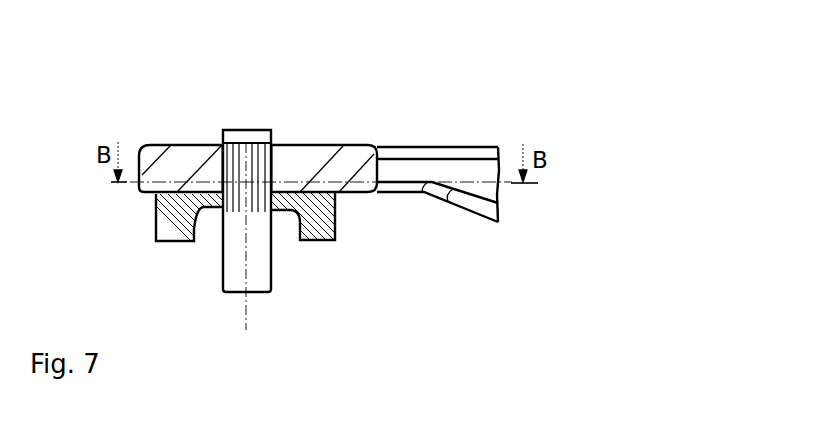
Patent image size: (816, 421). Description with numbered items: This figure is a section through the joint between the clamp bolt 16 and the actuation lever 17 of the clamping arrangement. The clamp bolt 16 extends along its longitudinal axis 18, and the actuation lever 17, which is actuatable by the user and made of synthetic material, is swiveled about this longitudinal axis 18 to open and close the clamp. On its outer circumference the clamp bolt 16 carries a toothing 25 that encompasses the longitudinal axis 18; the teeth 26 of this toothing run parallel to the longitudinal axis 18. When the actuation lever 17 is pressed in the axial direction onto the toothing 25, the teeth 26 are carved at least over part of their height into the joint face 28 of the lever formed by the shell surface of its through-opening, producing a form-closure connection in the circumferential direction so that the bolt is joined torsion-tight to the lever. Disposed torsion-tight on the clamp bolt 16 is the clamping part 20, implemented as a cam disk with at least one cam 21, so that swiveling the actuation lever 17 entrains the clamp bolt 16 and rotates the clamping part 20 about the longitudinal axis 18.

The clamp bolt 16 is at (263, 265).
The actuation lever 17 is at (412, 144).
The longitudinal axis 18 is at (248, 102).
The clamping part 20 is at (156, 214).
The cam 21 is at (183, 232).
The toothing 25 is at (242, 214).
The teeth 26 is at (272, 175).
The joint face 28 is at (222, 160).